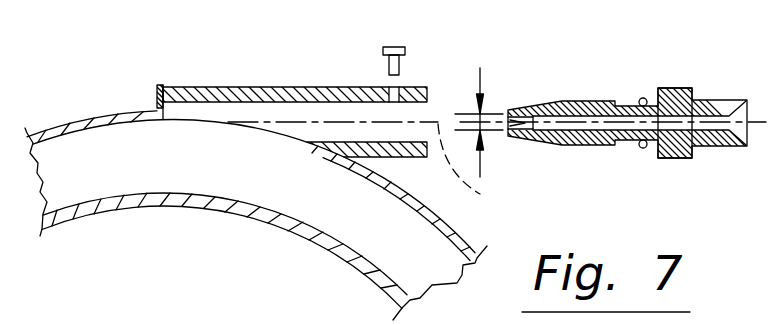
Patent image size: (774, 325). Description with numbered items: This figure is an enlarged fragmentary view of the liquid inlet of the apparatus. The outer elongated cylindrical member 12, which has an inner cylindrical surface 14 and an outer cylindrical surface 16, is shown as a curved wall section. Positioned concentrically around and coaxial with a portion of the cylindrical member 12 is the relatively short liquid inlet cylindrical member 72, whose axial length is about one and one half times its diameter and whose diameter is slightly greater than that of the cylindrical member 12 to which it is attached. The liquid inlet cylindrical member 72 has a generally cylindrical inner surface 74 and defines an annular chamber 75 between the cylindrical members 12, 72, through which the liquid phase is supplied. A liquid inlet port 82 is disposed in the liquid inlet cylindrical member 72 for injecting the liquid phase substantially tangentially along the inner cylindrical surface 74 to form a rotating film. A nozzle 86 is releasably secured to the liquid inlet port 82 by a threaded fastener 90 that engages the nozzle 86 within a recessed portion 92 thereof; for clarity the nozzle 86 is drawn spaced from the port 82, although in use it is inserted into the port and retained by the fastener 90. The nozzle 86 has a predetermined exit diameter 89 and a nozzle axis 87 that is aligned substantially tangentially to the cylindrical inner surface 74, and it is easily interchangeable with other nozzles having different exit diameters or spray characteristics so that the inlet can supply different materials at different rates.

The outer elongated cylindrical member 12 is at (267, 224).
The inner cylindrical surface 14 is at (335, 252).
The outer cylindrical surface 16 is at (327, 232).
The liquid inlet cylindrical member 72 is at (127, 113).
The cylindrical inner surface 74 is at (101, 127).
The annular chamber 75 is at (157, 157).
The liquid inlet port 82 is at (317, 85).
The nozzle 86 is at (573, 101).
The nozzle axis 87 is at (471, 168).
The exit diameter 89 is at (479, 82).
The threaded fastener 90 is at (398, 47).
The recessed portion 92 is at (613, 100).